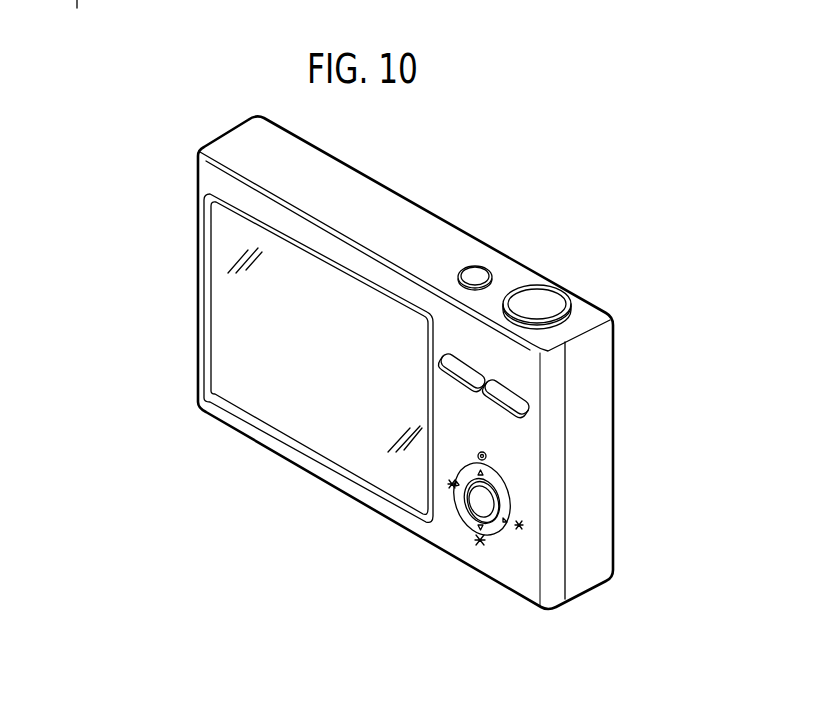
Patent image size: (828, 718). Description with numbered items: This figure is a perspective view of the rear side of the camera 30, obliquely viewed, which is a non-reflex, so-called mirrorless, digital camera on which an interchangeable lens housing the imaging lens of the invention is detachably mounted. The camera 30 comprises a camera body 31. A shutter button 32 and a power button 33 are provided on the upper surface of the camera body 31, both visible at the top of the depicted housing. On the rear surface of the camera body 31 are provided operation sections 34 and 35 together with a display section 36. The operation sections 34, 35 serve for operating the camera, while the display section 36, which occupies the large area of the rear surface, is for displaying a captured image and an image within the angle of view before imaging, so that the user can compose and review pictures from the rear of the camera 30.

The camera 30 is at (145, 271).
The camera body 31 is at (601, 482).
The shutter button 32 is at (545, 298).
The power button 33 is at (478, 272).
The operation section 34 is at (526, 417).
The operation section 35 is at (495, 523).
The display section 36 is at (301, 432).